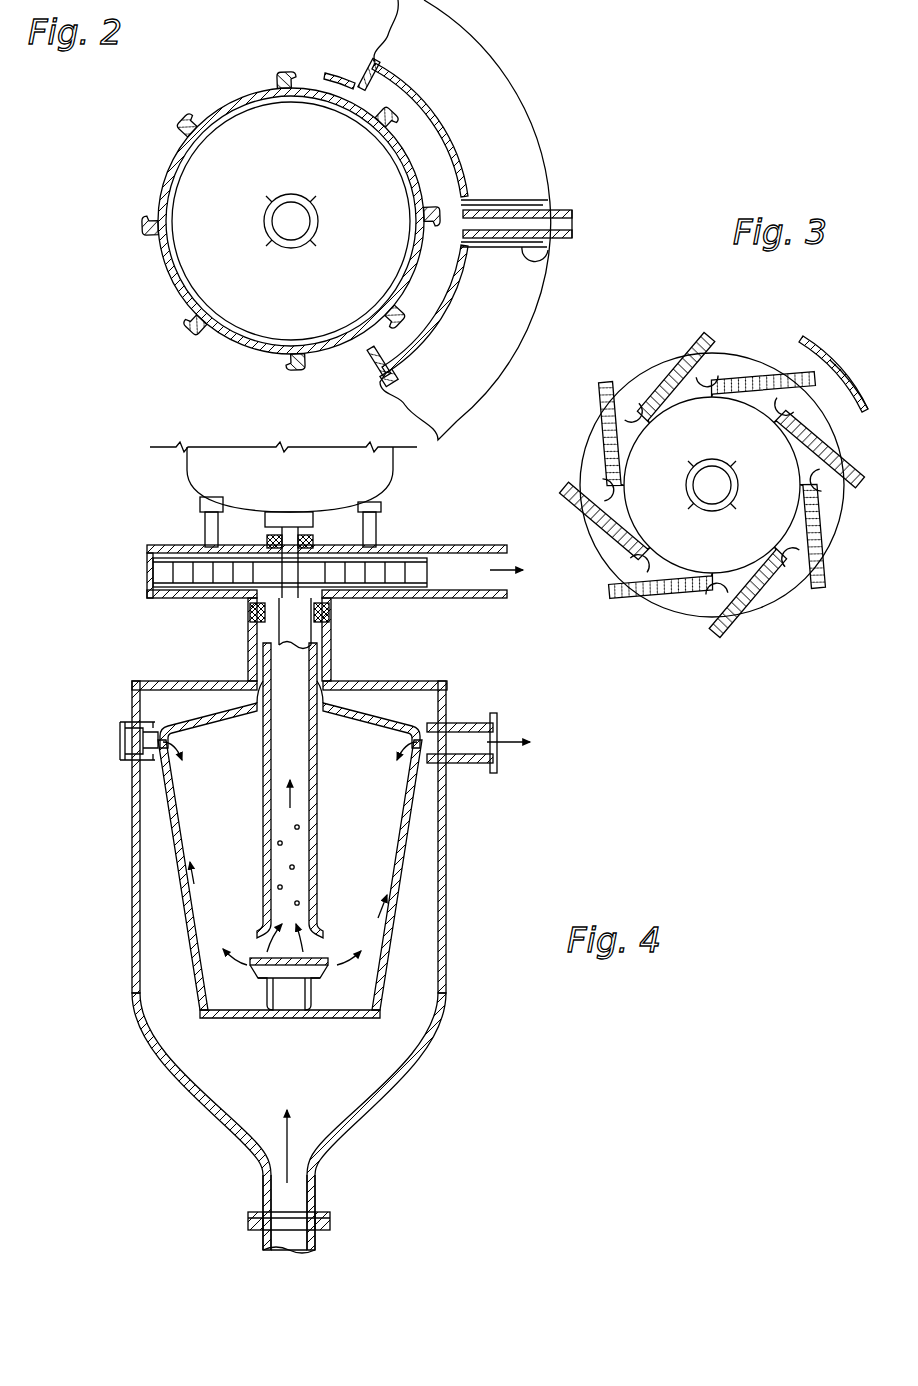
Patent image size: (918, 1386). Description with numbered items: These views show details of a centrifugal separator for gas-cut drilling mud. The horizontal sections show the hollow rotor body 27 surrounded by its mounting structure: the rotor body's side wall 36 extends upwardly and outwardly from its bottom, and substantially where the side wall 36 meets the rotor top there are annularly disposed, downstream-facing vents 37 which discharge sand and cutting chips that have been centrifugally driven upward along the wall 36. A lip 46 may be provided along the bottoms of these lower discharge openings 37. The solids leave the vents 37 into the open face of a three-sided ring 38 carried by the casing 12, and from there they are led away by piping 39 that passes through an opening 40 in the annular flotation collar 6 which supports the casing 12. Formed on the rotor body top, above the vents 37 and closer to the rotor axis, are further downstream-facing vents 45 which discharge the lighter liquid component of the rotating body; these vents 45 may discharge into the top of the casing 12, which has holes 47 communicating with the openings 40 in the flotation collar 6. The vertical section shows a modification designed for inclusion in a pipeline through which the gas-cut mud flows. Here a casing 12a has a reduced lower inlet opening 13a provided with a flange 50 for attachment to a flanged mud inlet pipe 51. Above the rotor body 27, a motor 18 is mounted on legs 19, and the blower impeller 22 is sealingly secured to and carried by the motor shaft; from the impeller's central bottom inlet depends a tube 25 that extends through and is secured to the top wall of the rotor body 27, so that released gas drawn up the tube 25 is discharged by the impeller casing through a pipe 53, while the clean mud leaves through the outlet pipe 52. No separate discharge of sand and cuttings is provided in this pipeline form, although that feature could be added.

In FIG. 2, the flotation collar 6 is at (478, 52).
In FIG. 2, the casing 12 is at (326, 64).
In FIG. 3, the casing 12 is at (803, 338).
In FIG. 4, the casing 12a is at (437, 1033).
In FIG. 4, the reduced lower inlet opening 13a is at (314, 1194).
In FIG. 4, the motor 18 is at (395, 477).
In FIG. 4, the legs 19 is at (378, 533).
In FIG. 4, the blower impeller 22 is at (384, 580).
In FIG. 2, the tube 25 is at (318, 213).
In FIG. 3, the tube 25 is at (738, 472).
In FIG. 4, the tube 25 is at (319, 849).
In FIG. 2, the rotor body 27 is at (209, 100).
In FIG. 3, the rotor body 27 is at (735, 340).
In FIG. 4, the rotor body 27 is at (388, 976).
In FIG. 2, the wall 36 is at (162, 166).
In FIG. 2, the vents 37 is at (284, 68).
In FIG. 2, the three-sided ring 38 is at (428, 142).
In FIG. 2, the piping 39 is at (572, 223).
In FIG. 2, the opening 40 is at (522, 268).
In FIG. 3, the vents 45 is at (676, 383).
In FIG. 2, the lip 46 is at (404, 259).
In FIG. 3, the lip 46 is at (712, 485).
In FIG. 3, the holes 47 is at (836, 365).
In FIG. 4, the flange 50 is at (327, 1218).
In FIG. 4, the mud inlet pipe 51 is at (314, 1238).
In FIG. 4, the outlet pipe 52 is at (463, 722).
In FIG. 4, the pipe 53 is at (466, 598).